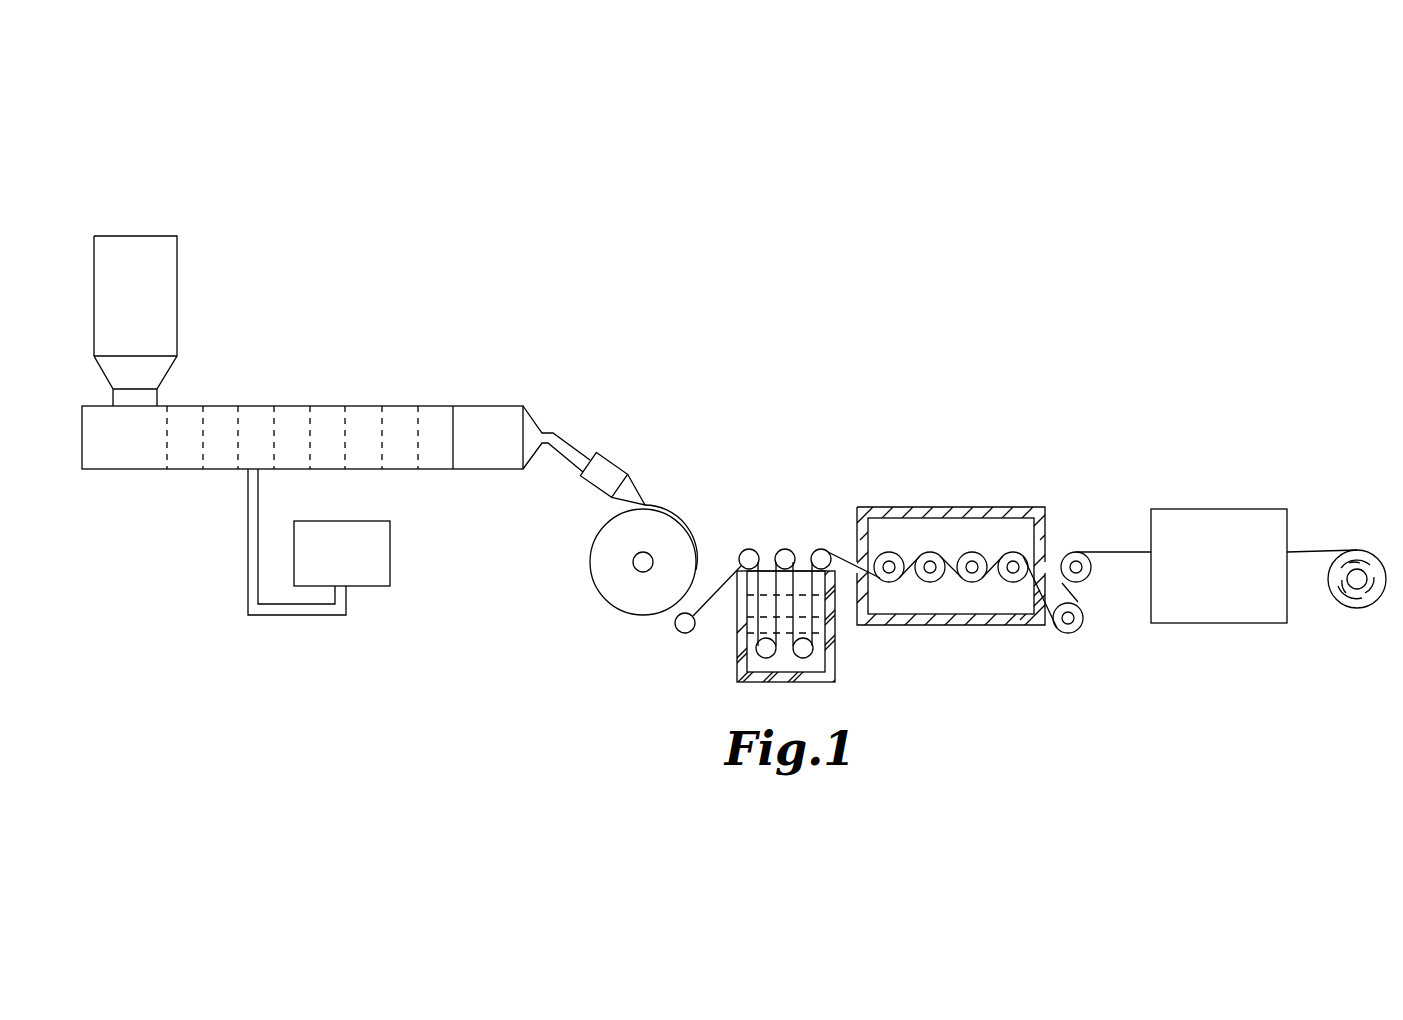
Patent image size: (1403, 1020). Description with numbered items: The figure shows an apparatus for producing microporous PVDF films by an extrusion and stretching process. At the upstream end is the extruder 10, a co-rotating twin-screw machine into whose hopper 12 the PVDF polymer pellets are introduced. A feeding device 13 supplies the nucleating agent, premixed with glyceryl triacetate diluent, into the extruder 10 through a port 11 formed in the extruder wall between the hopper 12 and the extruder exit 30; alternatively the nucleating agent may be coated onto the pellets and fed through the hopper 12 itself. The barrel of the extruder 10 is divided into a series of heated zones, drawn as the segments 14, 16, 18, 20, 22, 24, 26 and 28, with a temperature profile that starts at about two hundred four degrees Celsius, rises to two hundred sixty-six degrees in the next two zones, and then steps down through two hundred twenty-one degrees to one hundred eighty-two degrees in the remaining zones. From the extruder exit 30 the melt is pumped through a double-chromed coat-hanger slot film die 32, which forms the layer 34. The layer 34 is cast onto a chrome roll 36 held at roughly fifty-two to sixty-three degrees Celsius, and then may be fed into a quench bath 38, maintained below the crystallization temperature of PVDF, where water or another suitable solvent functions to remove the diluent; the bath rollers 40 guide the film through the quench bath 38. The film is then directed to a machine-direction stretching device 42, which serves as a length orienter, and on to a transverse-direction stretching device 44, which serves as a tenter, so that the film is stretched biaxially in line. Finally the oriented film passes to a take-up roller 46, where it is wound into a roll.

The extruder 10 is at (512, 405).
The port 11 is at (245, 471).
The hopper 12 is at (162, 265).
The feeding device 13 is at (375, 575).
The first heating zone 14 is at (186, 418).
The zone 1 16 is at (220, 418).
The zone 2 18 is at (253, 418).
The zone 3 20 is at (292, 418).
The zone 4 22 is at (322, 418).
The zone 5 24 is at (361, 418).
The zone 6 26 is at (398, 418).
The zone 7 28 is at (432, 418).
The extruder exit 30 is at (483, 418).
The film die 32 is at (605, 470).
The layer 34 is at (645, 505).
The chrome roll 36 is at (597, 585).
The quench bath 38 is at (748, 675).
The bath rollers 40 is at (815, 662).
The machine-direction stretching device 42 is at (919, 507).
The transverse-direction stretching device 44 is at (1220, 509).
The take-up roller 46 is at (1372, 560).